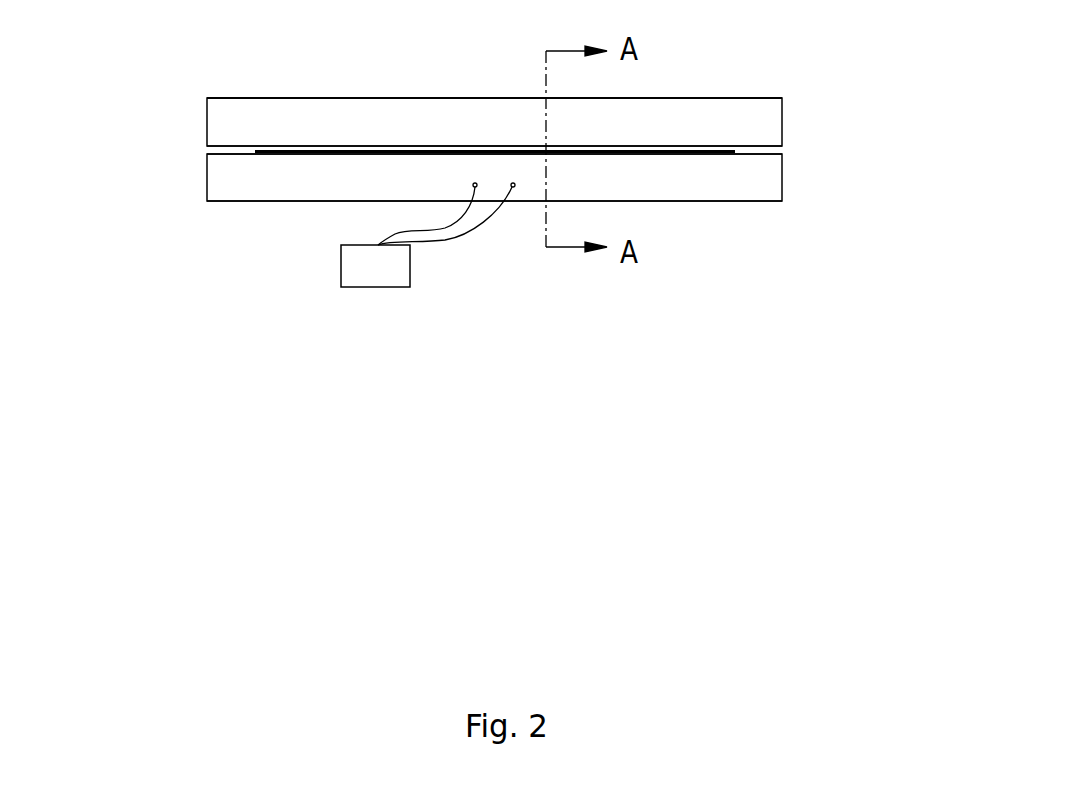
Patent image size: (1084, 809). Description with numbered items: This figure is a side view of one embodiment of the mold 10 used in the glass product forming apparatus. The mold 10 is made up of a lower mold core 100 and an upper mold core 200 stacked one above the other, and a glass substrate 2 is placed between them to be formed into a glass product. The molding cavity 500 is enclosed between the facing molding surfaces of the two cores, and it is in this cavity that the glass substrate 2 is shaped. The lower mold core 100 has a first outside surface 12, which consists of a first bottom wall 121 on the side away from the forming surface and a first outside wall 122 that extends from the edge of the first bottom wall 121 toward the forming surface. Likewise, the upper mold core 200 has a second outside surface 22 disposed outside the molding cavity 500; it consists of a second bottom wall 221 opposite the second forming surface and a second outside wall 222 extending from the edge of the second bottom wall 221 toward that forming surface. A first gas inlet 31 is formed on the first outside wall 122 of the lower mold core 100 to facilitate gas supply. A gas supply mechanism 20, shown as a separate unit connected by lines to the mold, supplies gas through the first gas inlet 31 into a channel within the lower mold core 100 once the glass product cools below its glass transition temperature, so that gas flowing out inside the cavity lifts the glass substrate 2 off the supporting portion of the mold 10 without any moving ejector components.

The glass substrate 2 is at (400, 148).
The mold 10 is at (583, 148).
The first outside surface 12 is at (413, 206).
The gas supply mechanism 20 is at (355, 267).
The second outside surface 22 is at (412, 139).
The first gas inlet 31 is at (475, 183).
The lower mold core 100 is at (770, 188).
The first bottom wall 121 is at (207, 201).
The first outside wall 122 is at (207, 187).
The upper mold core 200 is at (770, 128).
The second bottom wall 221 is at (207, 147).
The second outside wall 222 is at (207, 135).
The molding cavity 500 is at (593, 148).